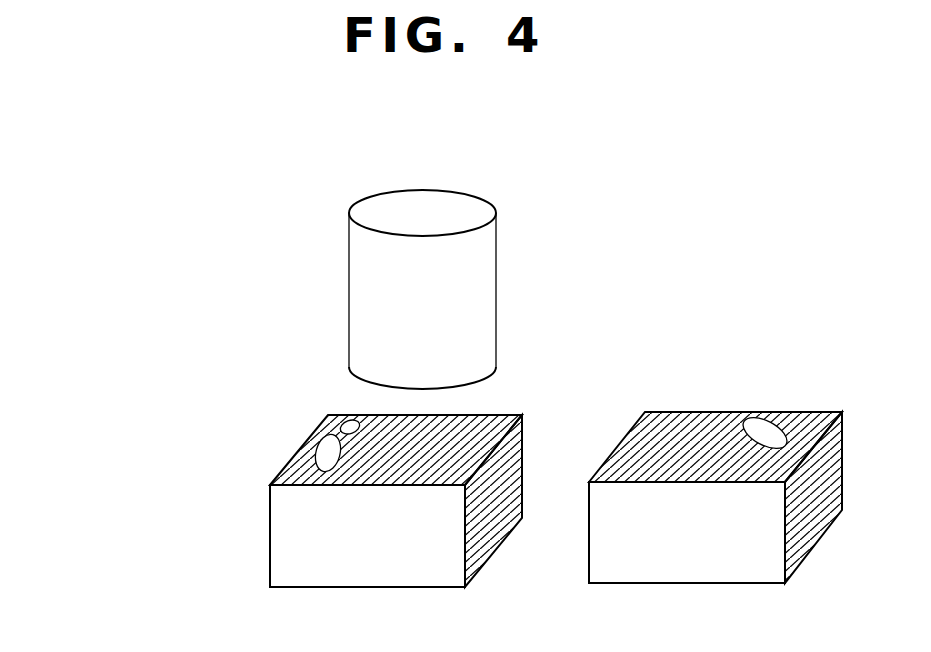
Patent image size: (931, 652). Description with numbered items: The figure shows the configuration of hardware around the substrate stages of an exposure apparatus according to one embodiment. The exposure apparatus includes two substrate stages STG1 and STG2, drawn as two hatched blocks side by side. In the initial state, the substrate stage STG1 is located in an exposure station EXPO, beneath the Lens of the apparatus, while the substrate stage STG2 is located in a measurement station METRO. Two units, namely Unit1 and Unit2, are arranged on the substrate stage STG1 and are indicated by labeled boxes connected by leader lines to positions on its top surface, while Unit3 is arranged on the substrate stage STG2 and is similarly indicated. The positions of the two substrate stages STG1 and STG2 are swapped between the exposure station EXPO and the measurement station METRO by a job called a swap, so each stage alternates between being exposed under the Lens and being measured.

The first unit Unit1 is at (328, 451).
The second unit Unit2 is at (348, 425).
The third unit Unit3 is at (760, 430).
The projection lens Lens is at (422, 289).
The first substrate stage STG1 is at (396, 523).
The second substrate stage STG2 is at (715, 518).
The exposure station EXPO is at (377, 616).
The measurement station METRO is at (695, 609).